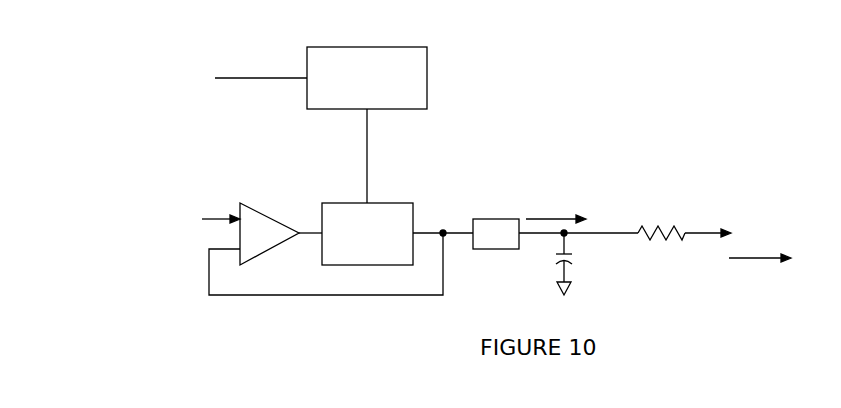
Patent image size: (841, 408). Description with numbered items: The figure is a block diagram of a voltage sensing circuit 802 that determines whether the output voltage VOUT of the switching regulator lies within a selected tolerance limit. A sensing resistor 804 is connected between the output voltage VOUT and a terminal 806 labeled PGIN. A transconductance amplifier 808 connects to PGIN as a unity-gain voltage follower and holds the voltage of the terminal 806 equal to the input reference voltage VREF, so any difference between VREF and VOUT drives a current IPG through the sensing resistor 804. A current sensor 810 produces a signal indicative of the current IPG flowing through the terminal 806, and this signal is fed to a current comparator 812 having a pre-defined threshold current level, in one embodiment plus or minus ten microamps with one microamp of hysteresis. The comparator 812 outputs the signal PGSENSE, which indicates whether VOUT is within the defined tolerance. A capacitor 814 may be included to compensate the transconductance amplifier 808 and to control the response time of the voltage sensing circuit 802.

The voltage sensing circuit 802 is at (733, 69).
The sensing resistor 804 is at (662, 212).
The terminal 806 is at (500, 219).
The transconductance amplifier 808 is at (262, 214).
The current sensor 810 is at (390, 203).
The current comparator 812 is at (427, 90).
The capacitor 814 is at (550, 269).